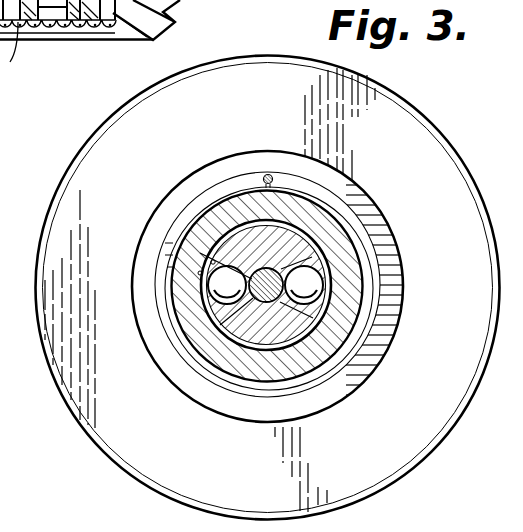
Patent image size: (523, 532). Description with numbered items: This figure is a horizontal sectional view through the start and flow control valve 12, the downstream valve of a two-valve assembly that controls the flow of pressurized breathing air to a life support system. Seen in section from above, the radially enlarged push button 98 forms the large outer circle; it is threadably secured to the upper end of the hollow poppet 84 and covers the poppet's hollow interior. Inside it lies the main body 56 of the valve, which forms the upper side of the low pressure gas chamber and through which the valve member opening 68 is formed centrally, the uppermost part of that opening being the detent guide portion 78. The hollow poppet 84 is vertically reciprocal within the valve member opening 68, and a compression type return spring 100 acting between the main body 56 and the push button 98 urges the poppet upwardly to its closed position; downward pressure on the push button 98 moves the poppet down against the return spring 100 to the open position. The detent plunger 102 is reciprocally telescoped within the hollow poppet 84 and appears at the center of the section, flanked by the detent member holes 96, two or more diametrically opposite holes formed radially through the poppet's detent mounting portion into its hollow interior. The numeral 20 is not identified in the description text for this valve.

The start and flow control valve 12 is at (270, 52).
The toothed rack 20 is at (73, 30).
The main body 56 is at (347, 252).
The valve member opening 68 is at (198, 267).
The detent guide portion 78 is at (212, 259).
The hollow poppet 84 is at (237, 337).
The detent member holes 96 is at (323, 296).
The push button 98 is at (405, 118).
The return spring 100 is at (253, 182).
The detent plunger 102 is at (265, 303).